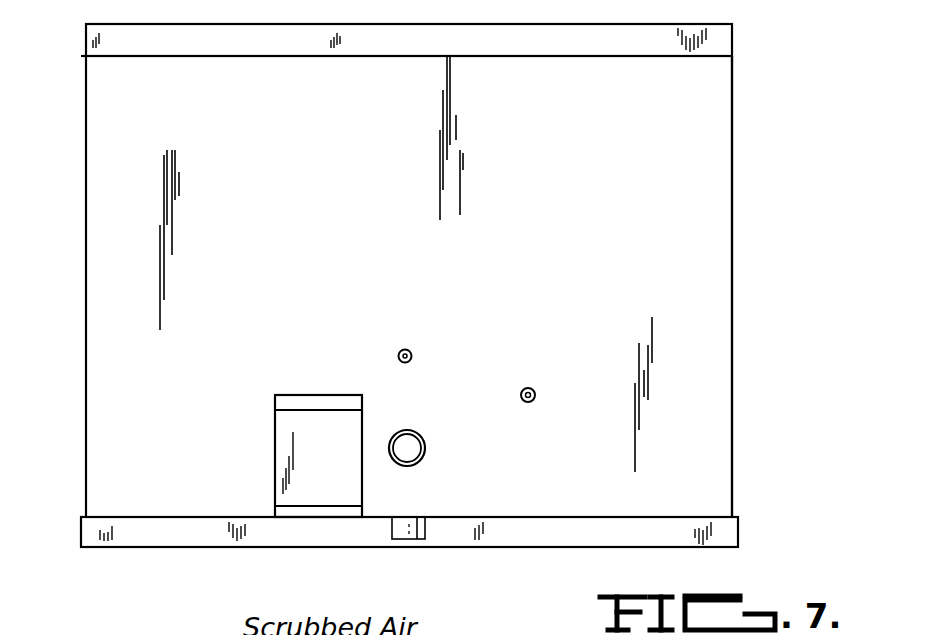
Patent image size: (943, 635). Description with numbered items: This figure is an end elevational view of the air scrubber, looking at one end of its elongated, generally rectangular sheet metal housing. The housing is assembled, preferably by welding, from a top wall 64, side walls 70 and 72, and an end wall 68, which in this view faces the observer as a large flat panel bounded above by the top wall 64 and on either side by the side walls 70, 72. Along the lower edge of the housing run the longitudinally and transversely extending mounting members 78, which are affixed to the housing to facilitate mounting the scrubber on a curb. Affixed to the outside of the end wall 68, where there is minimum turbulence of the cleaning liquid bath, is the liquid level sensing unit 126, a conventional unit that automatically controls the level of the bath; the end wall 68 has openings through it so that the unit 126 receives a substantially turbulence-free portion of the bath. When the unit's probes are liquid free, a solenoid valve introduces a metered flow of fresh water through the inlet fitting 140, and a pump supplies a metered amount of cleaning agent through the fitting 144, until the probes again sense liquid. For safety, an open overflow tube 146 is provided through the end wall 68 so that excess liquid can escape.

The top wall 64 is at (543, 56).
The end wall 68 is at (712, 135).
The side wall 70 is at (732, 347).
The side wall 72 is at (86, 432).
The mounting members 78 is at (720, 535).
The liquid level sensing unit 126 is at (336, 466).
The inlet fitting 140 is at (533, 388).
The fitting 144 is at (410, 350).
The overflow tube 146 is at (423, 460).